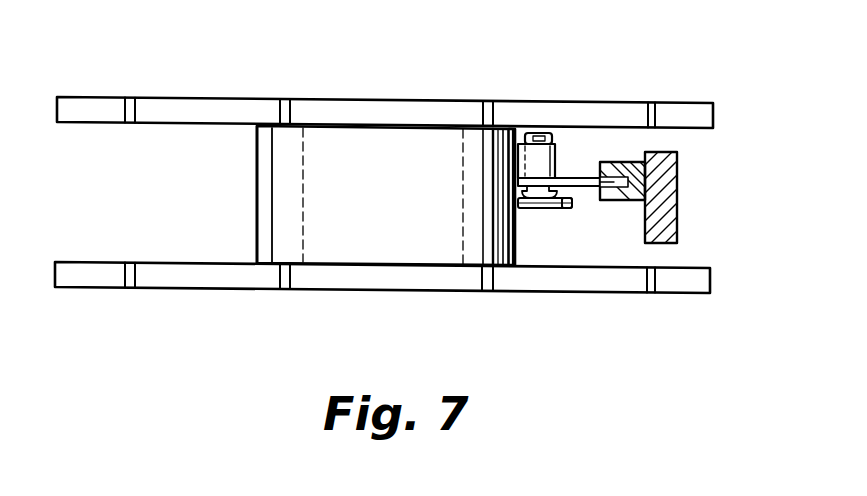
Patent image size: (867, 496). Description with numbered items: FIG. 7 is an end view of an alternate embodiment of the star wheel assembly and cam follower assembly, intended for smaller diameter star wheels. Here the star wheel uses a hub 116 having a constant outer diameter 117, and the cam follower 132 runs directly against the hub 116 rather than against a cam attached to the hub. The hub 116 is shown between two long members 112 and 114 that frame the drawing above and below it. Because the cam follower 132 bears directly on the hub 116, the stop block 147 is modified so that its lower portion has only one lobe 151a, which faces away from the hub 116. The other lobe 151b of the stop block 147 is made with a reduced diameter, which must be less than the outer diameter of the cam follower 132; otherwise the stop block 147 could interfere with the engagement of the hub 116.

The upper guide rail 112 is at (222, 97).
The lower guide rail 114 is at (176, 273).
The hub 116 is at (404, 232).
The constant outer diameter 117 is at (256, 171).
The cam follower 132 is at (557, 148).
The stop block 147 is at (558, 207).
The lobe 151a is at (572, 204).
The lobe 151b is at (515, 215).